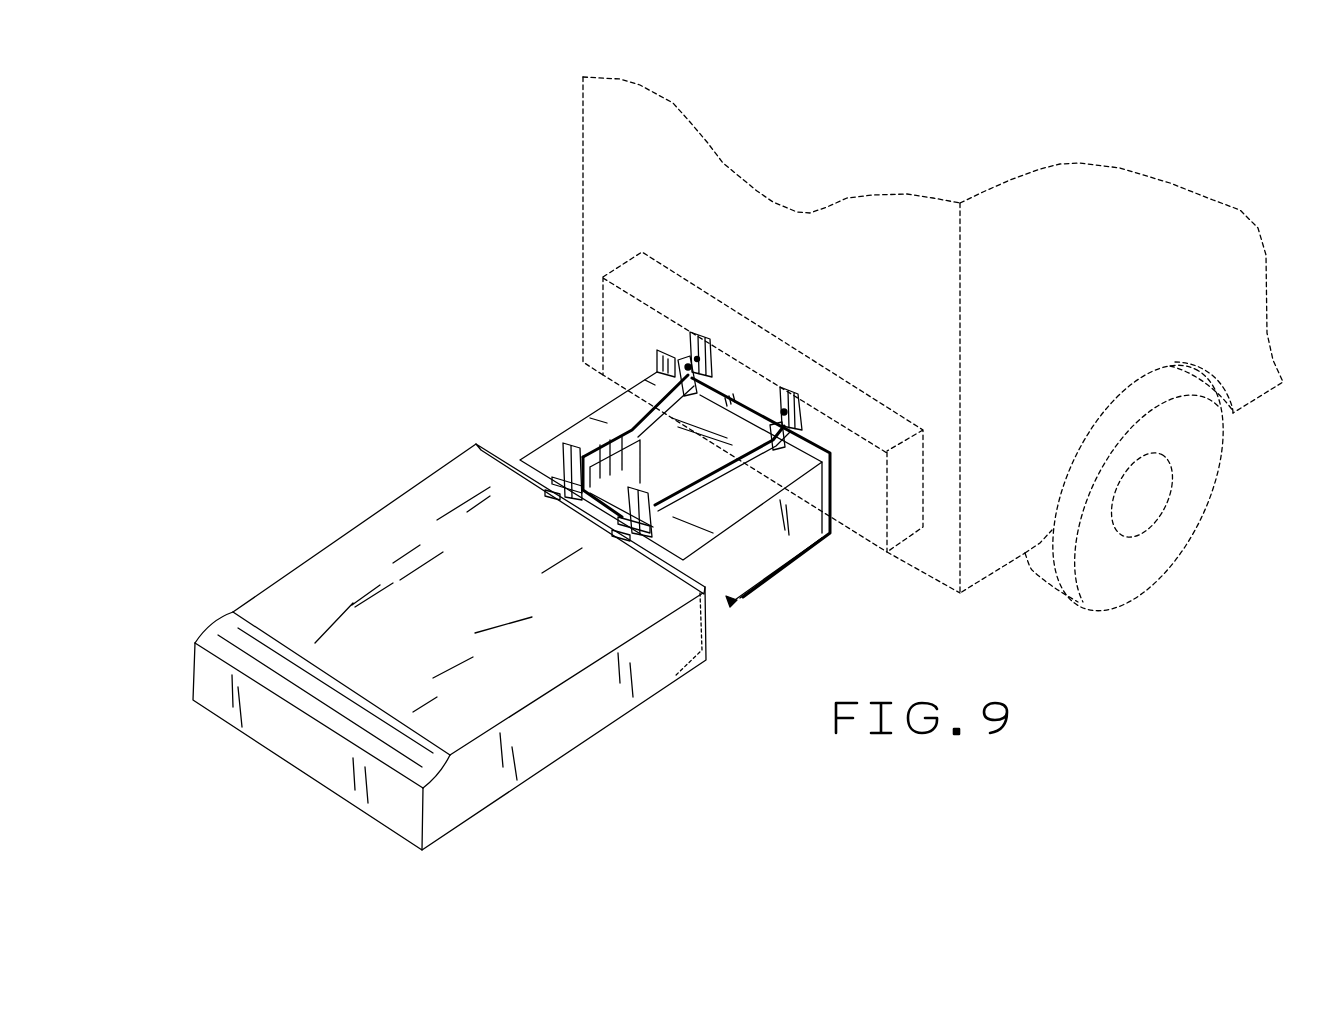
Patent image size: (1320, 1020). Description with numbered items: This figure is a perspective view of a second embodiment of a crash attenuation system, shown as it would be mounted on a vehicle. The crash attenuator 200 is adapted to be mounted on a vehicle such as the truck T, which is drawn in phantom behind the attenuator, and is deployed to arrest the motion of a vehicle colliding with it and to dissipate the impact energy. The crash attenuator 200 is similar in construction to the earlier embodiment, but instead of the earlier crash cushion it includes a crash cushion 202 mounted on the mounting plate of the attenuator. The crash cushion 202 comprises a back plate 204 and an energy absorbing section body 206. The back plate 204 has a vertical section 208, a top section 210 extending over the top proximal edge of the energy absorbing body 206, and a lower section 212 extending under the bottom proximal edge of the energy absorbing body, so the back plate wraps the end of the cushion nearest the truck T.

The truck T is at (607, 92).
The crash attenuator 200 is at (511, 591).
The crash cushion 202 is at (449, 629).
The back plate 204 is at (675, 530).
The energy absorbing section body 206 is at (481, 603).
The vertical section 208 is at (710, 650).
The top section 210 is at (473, 440).
The lower section 212 is at (682, 682).